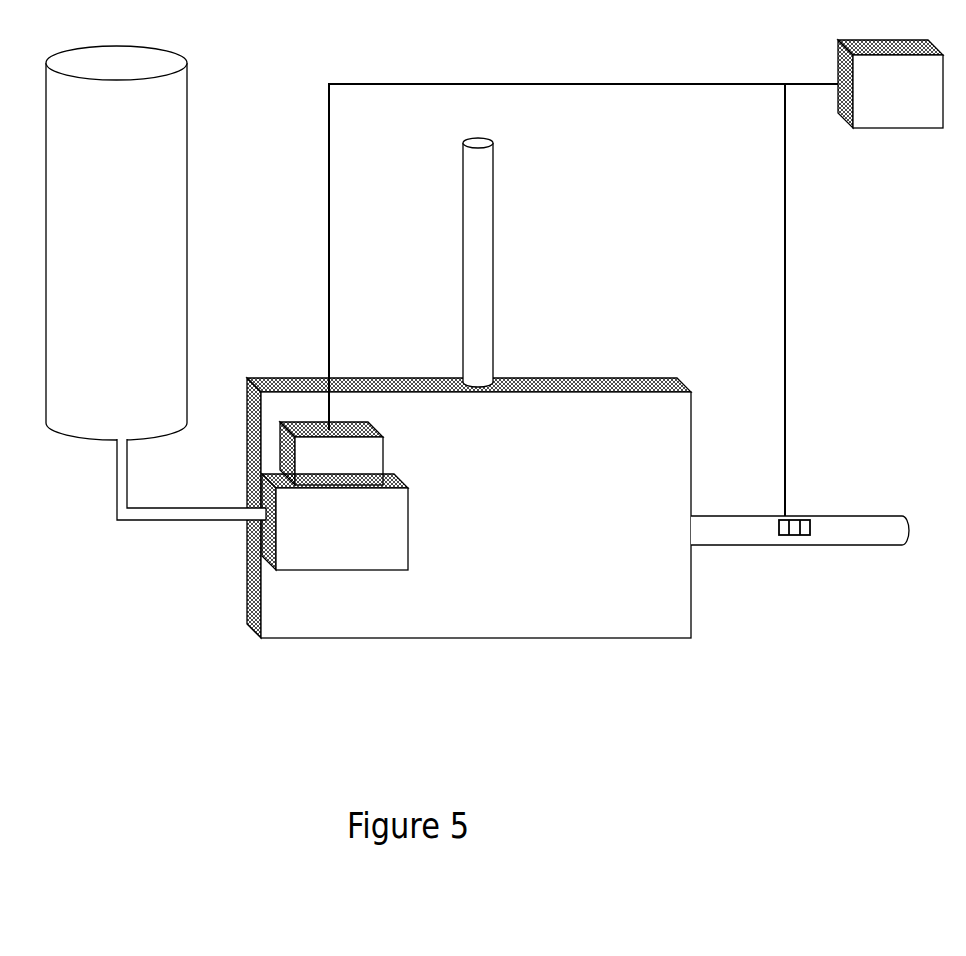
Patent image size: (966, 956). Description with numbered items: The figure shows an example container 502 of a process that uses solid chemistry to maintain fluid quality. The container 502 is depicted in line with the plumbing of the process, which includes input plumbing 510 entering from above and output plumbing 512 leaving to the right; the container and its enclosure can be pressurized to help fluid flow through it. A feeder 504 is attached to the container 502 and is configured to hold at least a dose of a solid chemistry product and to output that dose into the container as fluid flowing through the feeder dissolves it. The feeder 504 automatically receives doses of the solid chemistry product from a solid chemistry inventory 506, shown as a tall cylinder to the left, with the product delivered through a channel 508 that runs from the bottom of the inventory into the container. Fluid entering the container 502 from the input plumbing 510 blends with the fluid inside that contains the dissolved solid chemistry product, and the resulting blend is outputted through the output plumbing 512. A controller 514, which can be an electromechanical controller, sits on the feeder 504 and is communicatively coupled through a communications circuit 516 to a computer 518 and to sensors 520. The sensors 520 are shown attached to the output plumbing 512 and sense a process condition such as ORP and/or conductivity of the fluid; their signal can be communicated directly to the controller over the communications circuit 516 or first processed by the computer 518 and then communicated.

The container 502 is at (469, 508).
The feeder 504 is at (335, 522).
The solid chemistry inventory 506 is at (116, 243).
The channel 508 is at (113, 480).
The input plumbing 510 is at (465, 248).
The output plumbing 512 is at (843, 513).
The controller 514 is at (331, 453).
The communications circuit 516 is at (587, 83).
The computer 518 is at (890, 84).
The sensors 520 is at (775, 537).